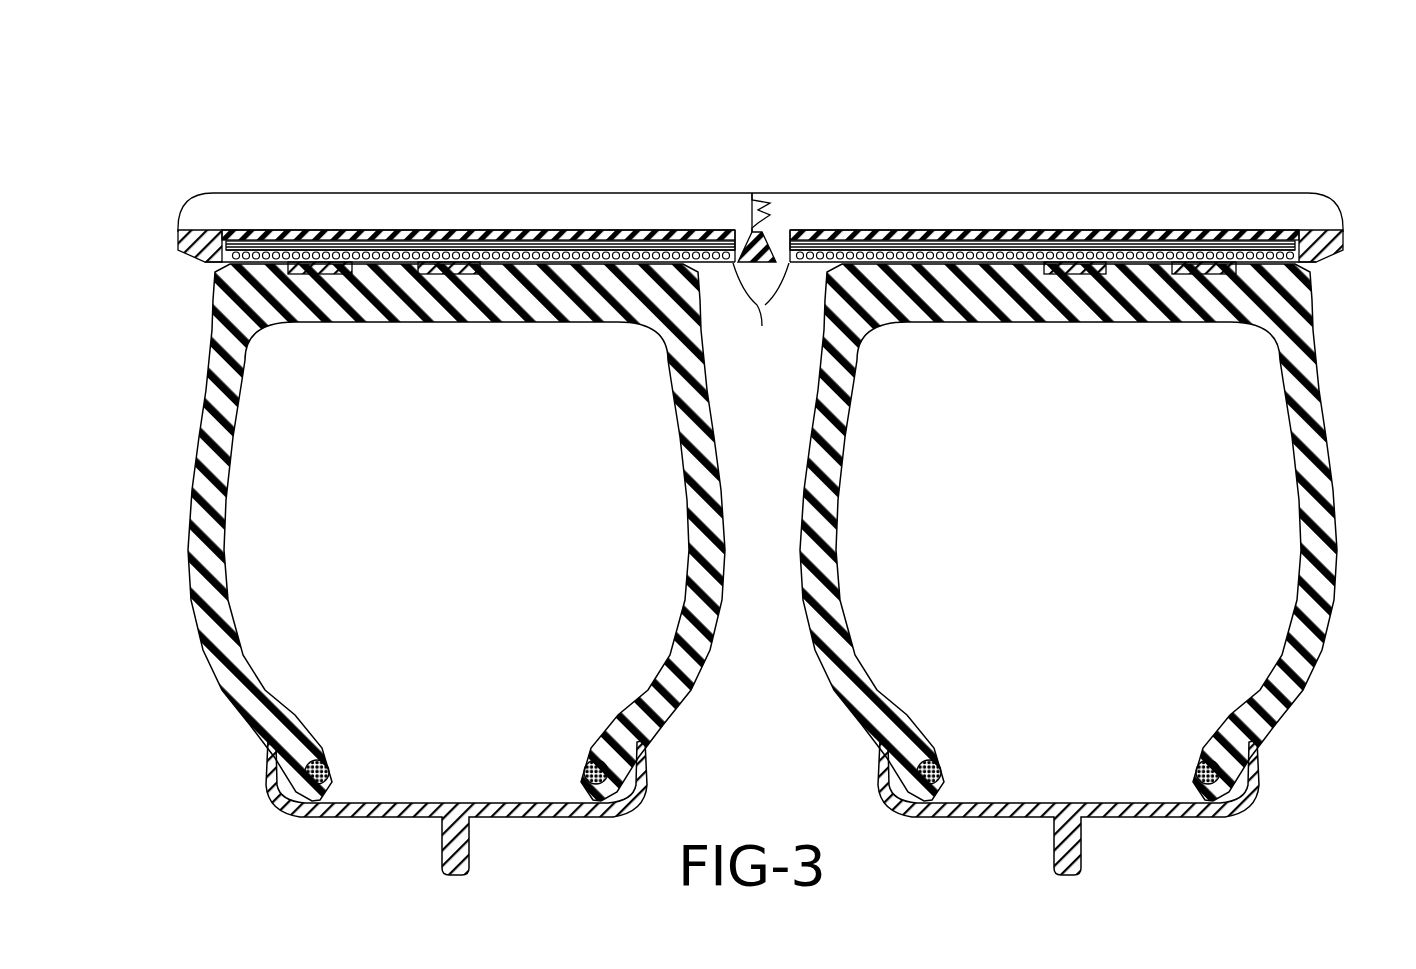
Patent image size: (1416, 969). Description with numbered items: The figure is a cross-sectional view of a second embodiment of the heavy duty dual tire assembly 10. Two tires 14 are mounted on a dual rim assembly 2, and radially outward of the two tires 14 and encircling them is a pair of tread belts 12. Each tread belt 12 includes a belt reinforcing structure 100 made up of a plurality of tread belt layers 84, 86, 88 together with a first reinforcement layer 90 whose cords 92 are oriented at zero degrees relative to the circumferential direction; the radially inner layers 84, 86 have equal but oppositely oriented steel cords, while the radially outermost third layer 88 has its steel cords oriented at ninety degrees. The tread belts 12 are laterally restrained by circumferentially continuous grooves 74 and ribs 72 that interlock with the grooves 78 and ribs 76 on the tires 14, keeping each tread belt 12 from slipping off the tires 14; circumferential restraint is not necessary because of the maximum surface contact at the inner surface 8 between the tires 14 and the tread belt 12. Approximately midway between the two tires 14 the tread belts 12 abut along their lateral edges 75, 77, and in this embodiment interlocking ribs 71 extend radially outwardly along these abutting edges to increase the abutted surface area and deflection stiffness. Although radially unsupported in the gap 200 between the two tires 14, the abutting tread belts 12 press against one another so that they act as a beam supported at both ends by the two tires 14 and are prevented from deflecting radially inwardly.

The dual tire assembly 10 is at (183, 150).
The tread belt 12 is at (259, 194).
The tire 14 is at (188, 503).
The dual rim assembly 2 is at (406, 805).
The inner surface 8 is at (761, 309).
The gap 200 is at (765, 376).
The interlocking ribs 71 is at (770, 203).
The ribs 72 is at (593, 247).
The grooves 74 is at (518, 238).
The lateral edge 75 is at (180, 231).
The ribs 76 is at (385, 278).
The lateral edge 77 is at (742, 193).
The grooves 78 is at (472, 274).
The radially inner belt layer 84 is at (1243, 250).
The radially inner belt layer 86 is at (1168, 247).
The radially outermost third layer 88 is at (1090, 244).
The first reinforcement layer 90 is at (348, 257).
The cords 92 is at (425, 262).
The belt reinforcing structure 100 is at (196, 263).